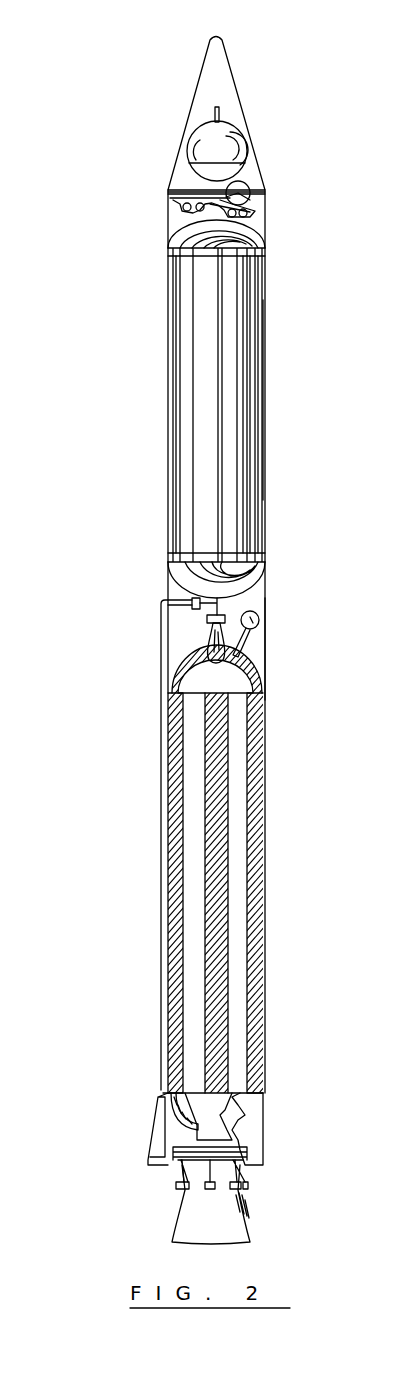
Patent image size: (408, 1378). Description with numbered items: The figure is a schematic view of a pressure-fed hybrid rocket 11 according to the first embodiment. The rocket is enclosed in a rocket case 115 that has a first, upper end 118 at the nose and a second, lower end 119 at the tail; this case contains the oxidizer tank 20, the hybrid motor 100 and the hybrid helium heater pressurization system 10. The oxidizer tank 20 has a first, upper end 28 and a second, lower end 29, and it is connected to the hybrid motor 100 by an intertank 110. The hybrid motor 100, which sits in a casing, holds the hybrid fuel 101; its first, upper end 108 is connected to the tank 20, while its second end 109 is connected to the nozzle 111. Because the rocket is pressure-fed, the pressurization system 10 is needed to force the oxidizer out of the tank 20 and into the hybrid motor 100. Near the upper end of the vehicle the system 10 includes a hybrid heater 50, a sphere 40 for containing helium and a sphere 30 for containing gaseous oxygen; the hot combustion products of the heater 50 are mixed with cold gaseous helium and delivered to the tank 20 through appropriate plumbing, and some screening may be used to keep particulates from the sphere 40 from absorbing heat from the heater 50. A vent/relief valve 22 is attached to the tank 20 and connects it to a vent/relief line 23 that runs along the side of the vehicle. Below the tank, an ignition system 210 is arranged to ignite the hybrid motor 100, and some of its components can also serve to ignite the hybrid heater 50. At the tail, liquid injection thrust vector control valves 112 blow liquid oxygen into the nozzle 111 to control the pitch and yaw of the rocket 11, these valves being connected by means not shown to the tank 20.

The hybrid helium heater pressurization system 10 is at (138, 191).
The pressure-fed hybrid rocket 11 is at (133, 381).
The first, upper end of rocket case 118 is at (220, 38).
The sphere for containing helium 40 is at (229, 137).
The sphere for containing gaseous oxygen 30 is at (253, 191).
The hybrid heater 50 is at (172, 222).
The first, upper end of tank 28 is at (257, 224).
The oxidizer tank 20 is at (252, 306).
The rocket case 115 is at (265, 425).
The second, lower end of tank 29 is at (182, 572).
The intertank 110 is at (263, 610).
The vent/relief valve 22 is at (191, 608).
The first, upper end of hybrid motor 108 is at (190, 646).
The ignition system 210 is at (259, 622).
The hybrid motor 100 is at (174, 778).
The hybrid fuel 101 is at (222, 756).
The vent/relief line 23 is at (160, 904).
The second end of hybrid motor 109 is at (173, 1128).
The second, lower end of rocket case 119 is at (255, 1163).
The liquid injection thrust vector control valves 112 is at (205, 1185).
The nozzle 111 is at (232, 1215).